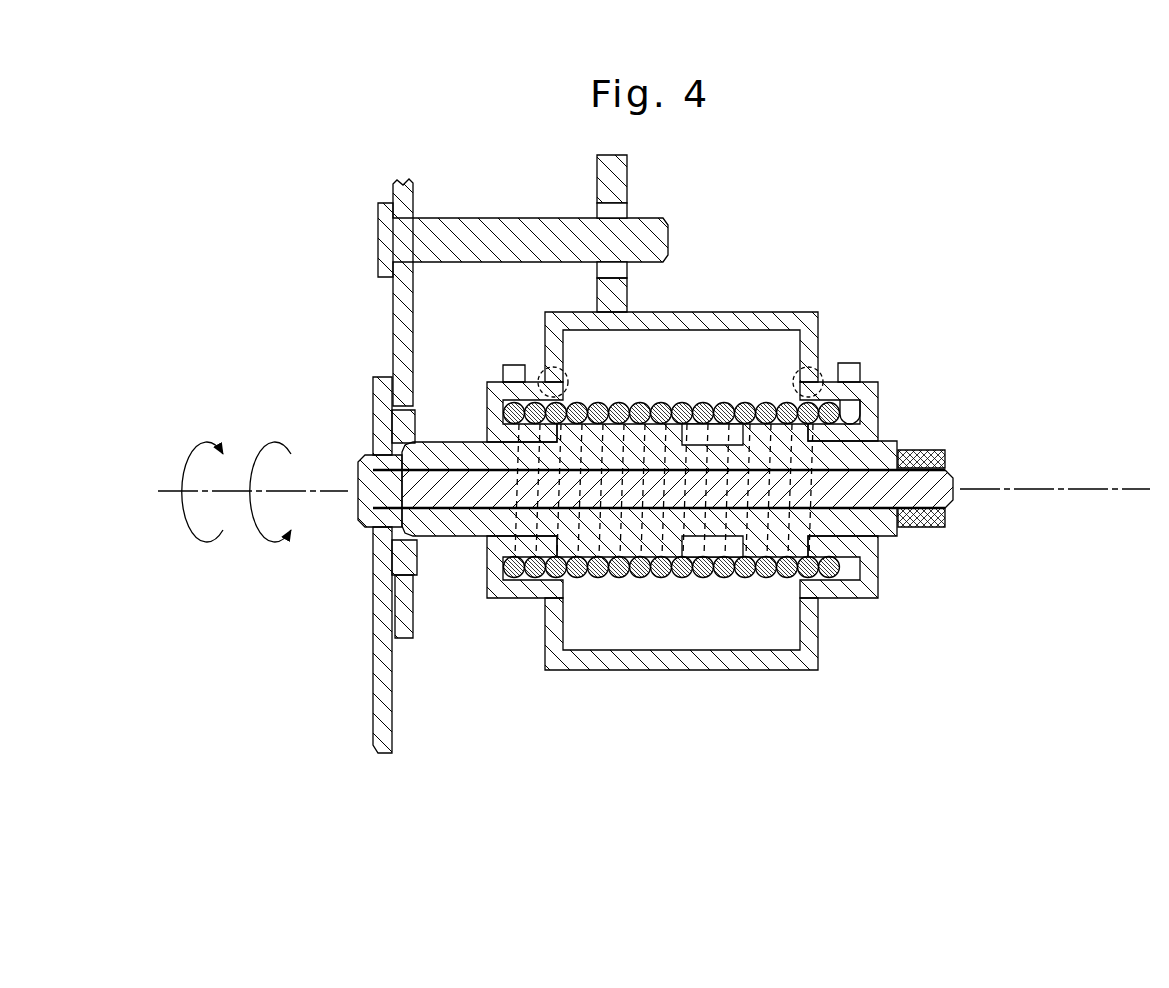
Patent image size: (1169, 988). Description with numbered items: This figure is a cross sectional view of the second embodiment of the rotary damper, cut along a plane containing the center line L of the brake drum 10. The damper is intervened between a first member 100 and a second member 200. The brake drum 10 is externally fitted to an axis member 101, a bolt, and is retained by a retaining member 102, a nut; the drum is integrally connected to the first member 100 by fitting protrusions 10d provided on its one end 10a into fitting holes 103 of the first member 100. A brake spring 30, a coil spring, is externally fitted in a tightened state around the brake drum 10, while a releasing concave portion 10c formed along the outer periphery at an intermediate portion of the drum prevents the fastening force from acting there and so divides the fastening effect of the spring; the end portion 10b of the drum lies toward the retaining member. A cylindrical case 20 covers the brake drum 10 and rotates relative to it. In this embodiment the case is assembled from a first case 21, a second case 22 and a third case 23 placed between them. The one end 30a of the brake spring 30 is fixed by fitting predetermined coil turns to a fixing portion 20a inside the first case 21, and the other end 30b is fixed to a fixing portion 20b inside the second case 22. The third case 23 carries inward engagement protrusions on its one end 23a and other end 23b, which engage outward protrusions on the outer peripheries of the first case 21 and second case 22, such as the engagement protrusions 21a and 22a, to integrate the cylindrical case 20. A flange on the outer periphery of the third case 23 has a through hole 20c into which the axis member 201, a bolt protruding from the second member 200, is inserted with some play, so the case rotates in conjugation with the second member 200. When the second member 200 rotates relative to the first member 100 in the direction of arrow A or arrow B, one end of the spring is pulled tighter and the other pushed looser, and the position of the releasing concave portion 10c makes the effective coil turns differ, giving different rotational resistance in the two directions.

The brake drum 10 is at (650, 466).
The one end of the brake drum 10a is at (399, 447).
The stepped end portion of shaft 10b is at (903, 521).
The releasing concave portion 10c is at (714, 440).
The fitting protrusions 10d is at (403, 533).
The cylindrical case 20 is at (681, 552).
The fixing portion 20a is at (523, 549).
The fixing portion 20b is at (833, 600).
The through hole 20c is at (618, 212).
The first case 21 is at (537, 603).
The engagement protrusions 21a is at (562, 379).
The second case 22 is at (831, 599).
The engagement protrusions 22a is at (853, 337).
The third case 23 is at (680, 671).
The one end of the third case 23a is at (548, 338).
The other end of the third case 23b is at (800, 375).
The brake spring 30 is at (690, 396).
The one end of the brake spring 30a is at (513, 364).
The other end of the brake spring 30b is at (849, 362).
The first member 100 is at (371, 709).
The axis member 101 is at (955, 495).
The retaining member 102 is at (931, 450).
The fitting holes 103 is at (403, 527).
The second member 200 is at (391, 318).
The axis member 201 is at (380, 226).
The direction of arrow A is at (270, 504).
The direction of arrow B is at (202, 504).
The center line L is at (1082, 486).